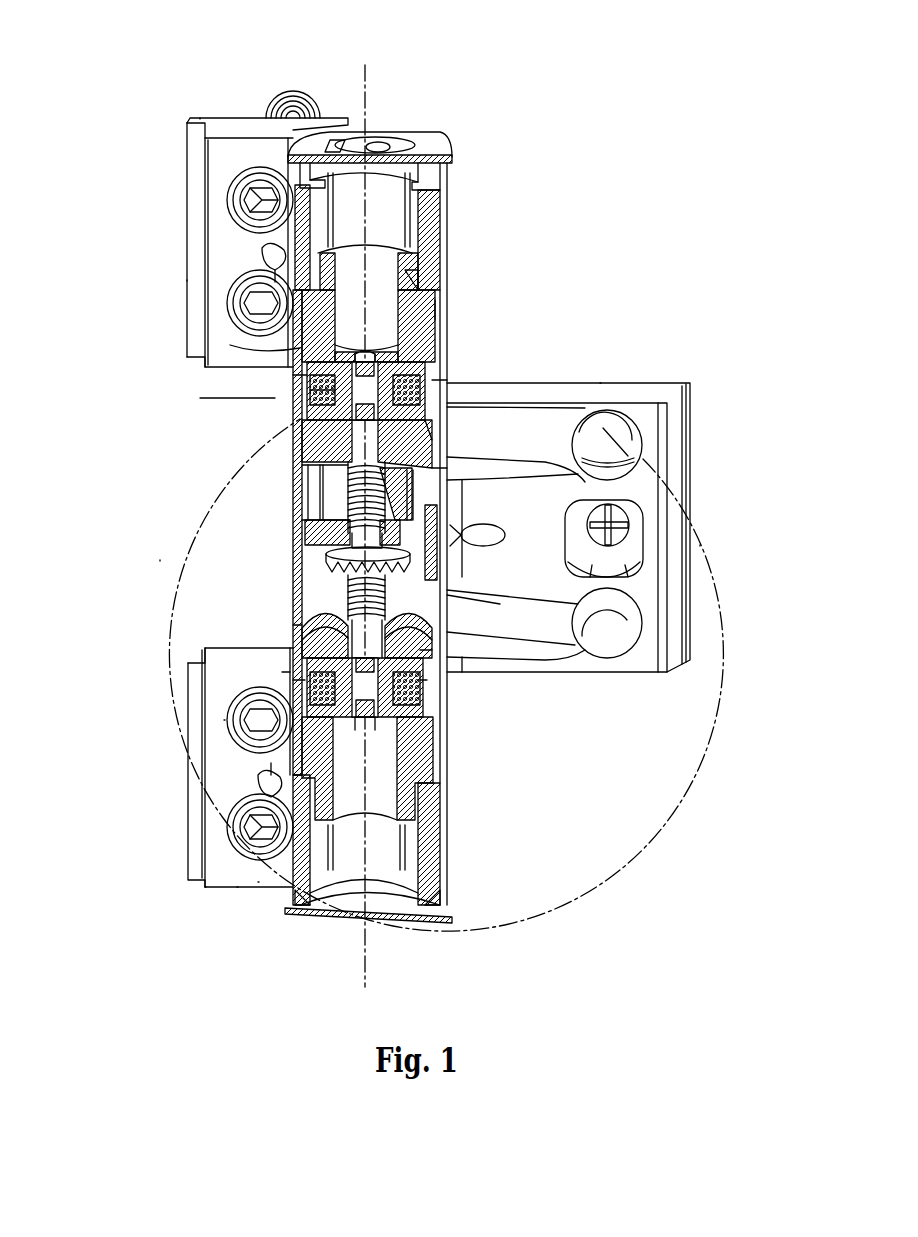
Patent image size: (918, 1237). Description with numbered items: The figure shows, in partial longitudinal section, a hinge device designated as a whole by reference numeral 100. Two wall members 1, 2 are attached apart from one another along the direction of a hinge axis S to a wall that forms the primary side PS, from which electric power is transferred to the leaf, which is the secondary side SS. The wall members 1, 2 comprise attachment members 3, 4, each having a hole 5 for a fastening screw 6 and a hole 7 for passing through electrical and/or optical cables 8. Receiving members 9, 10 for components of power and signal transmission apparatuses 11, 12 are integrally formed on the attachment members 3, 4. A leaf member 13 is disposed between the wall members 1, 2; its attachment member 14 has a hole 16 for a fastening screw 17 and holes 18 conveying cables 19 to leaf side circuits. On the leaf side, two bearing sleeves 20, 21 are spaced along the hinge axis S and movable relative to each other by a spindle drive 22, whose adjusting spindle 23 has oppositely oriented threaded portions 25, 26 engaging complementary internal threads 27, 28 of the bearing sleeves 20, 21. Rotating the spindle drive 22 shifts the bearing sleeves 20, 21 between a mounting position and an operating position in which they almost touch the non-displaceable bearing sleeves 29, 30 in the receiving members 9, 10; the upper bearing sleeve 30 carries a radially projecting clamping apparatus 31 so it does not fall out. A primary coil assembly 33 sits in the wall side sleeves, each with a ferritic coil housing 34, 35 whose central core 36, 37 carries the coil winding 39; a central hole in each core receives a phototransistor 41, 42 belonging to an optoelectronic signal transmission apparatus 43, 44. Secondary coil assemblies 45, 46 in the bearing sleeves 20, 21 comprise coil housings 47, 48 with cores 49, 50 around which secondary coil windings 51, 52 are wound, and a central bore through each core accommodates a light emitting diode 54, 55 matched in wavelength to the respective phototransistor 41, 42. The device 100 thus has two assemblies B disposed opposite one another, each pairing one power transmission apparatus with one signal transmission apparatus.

The wall member 1 is at (208, 76).
The wall member 2 is at (200, 914).
The attachment member 3 is at (195, 205).
The attachment member 4 is at (195, 842).
The hole 5 is at (222, 190).
The fastening screw 6 is at (293, 105).
The hole 7 is at (248, 300).
The electrical and/or optical cables 8 is at (235, 345).
The receiving member 9 is at (447, 205).
The receiving member 10 is at (447, 838).
The power and signal transmission apparatus 11 is at (382, 262).
The power and signal transmission apparatus 12 is at (402, 772).
The leaf member 13 is at (646, 350).
The attachment member 14 is at (670, 382).
The hole 16 is at (628, 545).
The fastening screw 17 is at (622, 512).
The holes 18 is at (622, 445).
The electrical and/or optical cables 19 is at (548, 410).
The bearing sleeve 20 is at (277, 532).
The bearing sleeve 21 is at (422, 650).
The spindle drive 22 is at (275, 545).
The adjusting spindle 23 is at (445, 594).
The threaded portion 25 is at (312, 497).
The threaded portion 26 is at (400, 618).
The internal thread 27 is at (450, 500).
The internal thread 28 is at (450, 560).
The bearing sleeve 29 is at (425, 893).
The bearing sleeve 30 is at (440, 300).
The clamping apparatus 31 is at (418, 278).
The primary coil assembly 33 is at (405, 360).
The coil housing 34 is at (422, 735).
The coil housing 35 is at (305, 372).
The central core 36 is at (355, 722).
The central core 37 is at (355, 348).
The coil winding 39 is at (445, 400).
The phototransistor 41 is at (375, 348).
The phototransistor 42 is at (375, 722).
The optoelectronic signal transmission apparatus 43 is at (305, 648).
The optoelectronic signal transmission apparatus 44 is at (318, 392).
The secondary coil assembly 45 is at (422, 680).
The secondary coil assembly 46 is at (362, 394).
The coil housing 47 is at (422, 700).
The coil housing 48 is at (440, 466).
The core 49 is at (305, 625).
The core 50 is at (342, 420).
The secondary coil winding 51 is at (300, 685).
The secondary coil winding 52 is at (425, 378).
The light emitting diode 54 is at (370, 655).
The light emitting diode 55 is at (428, 435).
The device 100 is at (632, 84).
The pivot direction A is at (200, 530).
The assembly B is at (180, 280).
The hinge axis S is at (368, 972).
The primary side PS is at (107, 544).
The secondary side SS is at (740, 540).